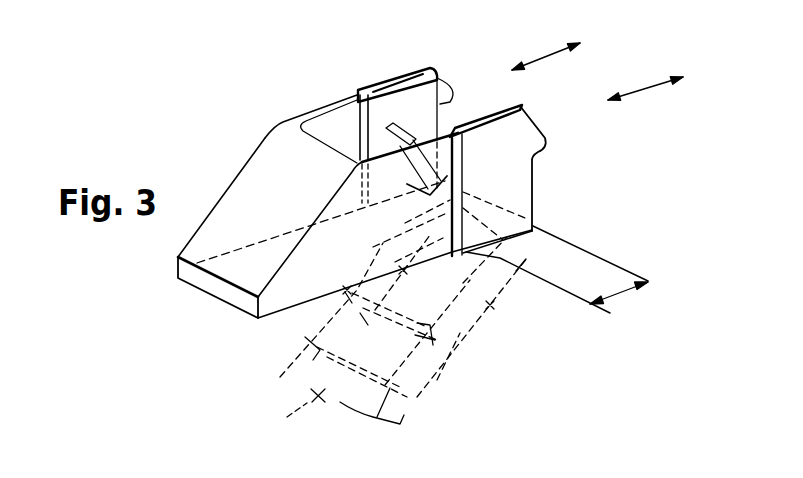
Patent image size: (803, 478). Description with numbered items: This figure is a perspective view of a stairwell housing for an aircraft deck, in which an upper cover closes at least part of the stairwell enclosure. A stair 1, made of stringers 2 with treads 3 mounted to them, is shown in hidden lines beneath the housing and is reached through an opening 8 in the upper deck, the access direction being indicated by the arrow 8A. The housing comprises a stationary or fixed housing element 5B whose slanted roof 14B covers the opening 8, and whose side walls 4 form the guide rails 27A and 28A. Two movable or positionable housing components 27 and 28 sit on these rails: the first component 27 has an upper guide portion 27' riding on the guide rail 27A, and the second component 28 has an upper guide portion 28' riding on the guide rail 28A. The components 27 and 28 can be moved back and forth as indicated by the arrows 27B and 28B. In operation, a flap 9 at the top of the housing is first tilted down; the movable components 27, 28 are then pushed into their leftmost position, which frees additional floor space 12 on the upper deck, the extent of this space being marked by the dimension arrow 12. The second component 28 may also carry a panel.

The stair 1 is at (399, 333).
The stringers 2 is at (290, 378).
The treads 3 is at (427, 397).
The side walls 4 is at (297, 283).
The fixed housing element 5B is at (250, 150).
The opening 8 is at (237, 272).
The arrow 8A is at (416, 146).
The flap 9 is at (423, 108).
The additional floor space 12 is at (628, 292).
The slanted roof 14B is at (238, 204).
The movable housing component 27 is at (384, 72).
The guide rail 27A is at (311, 117).
The arrow 27B is at (544, 57).
The upper guide portion 27' is at (405, 59).
The movable housing component 28 is at (531, 179).
The guide rail 28A is at (381, 190).
The arrow 28B is at (650, 88).
The upper guide portion 28' is at (516, 166).